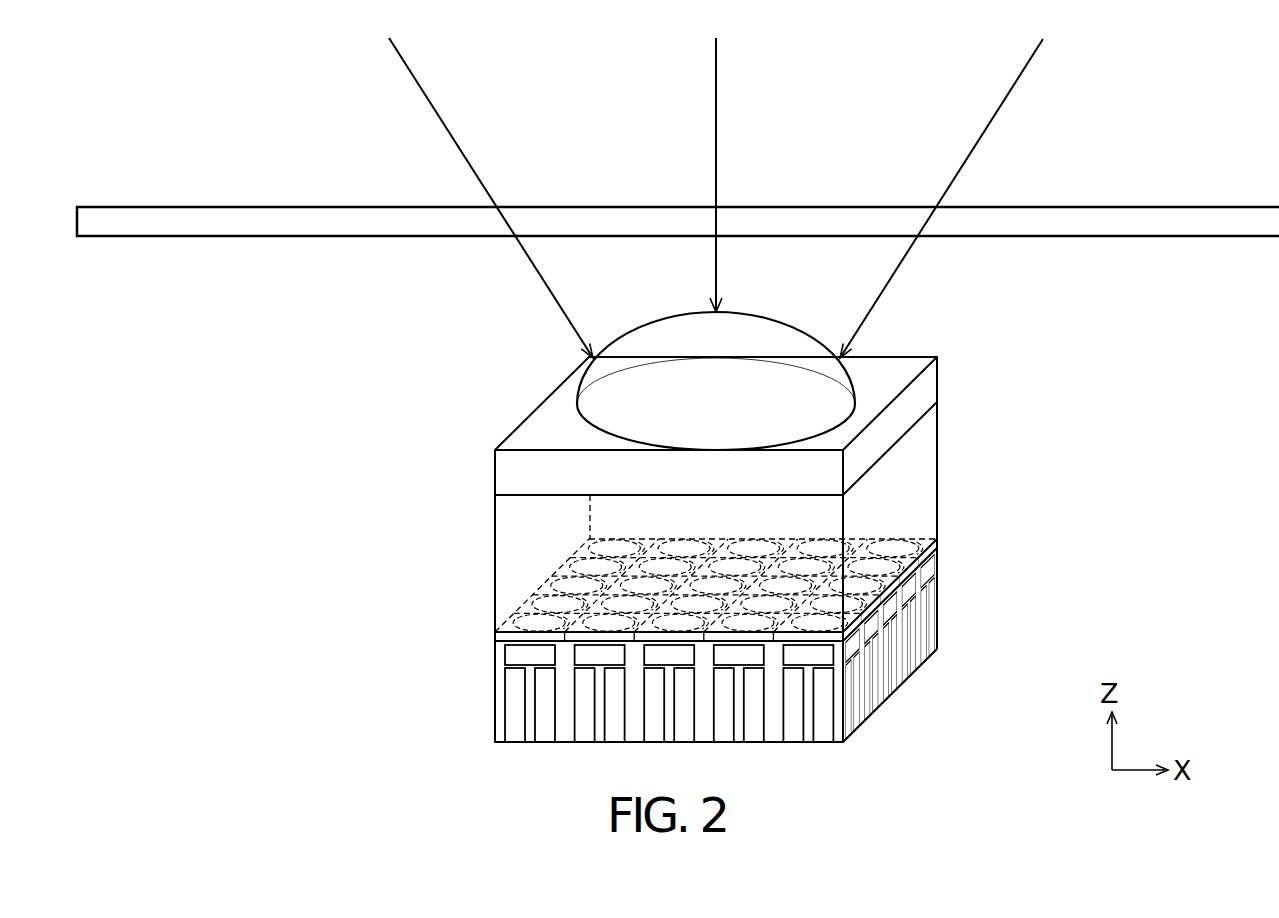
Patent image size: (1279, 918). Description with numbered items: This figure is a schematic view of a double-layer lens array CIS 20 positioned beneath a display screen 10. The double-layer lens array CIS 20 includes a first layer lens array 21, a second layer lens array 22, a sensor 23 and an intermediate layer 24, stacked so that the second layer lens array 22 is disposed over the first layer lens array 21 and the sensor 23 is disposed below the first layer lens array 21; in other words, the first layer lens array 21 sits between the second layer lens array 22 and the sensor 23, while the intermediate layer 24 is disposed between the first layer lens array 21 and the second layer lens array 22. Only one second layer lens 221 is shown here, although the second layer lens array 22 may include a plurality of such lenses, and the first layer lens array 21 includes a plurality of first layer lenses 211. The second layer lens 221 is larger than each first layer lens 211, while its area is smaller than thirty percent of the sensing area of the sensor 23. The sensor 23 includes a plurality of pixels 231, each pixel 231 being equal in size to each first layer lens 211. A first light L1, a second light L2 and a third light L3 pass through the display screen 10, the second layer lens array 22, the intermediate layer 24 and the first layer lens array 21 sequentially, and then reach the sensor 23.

The display screen 10 is at (128, 207).
The double-layer lens array CIS 20 is at (386, 353).
The second layer lens array 22 is at (705, 480).
The second layer lens 221 is at (927, 387).
The first layer lens 211 is at (898, 530).
The intermediate layer 24 is at (517, 549).
The first layer lens array 21 is at (705, 554).
The sensor 23 is at (492, 690).
The pixel 231 is at (926, 615).
The first light L1 is at (716, 117).
The second light L2 is at (993, 117).
The third light L3 is at (438, 117).